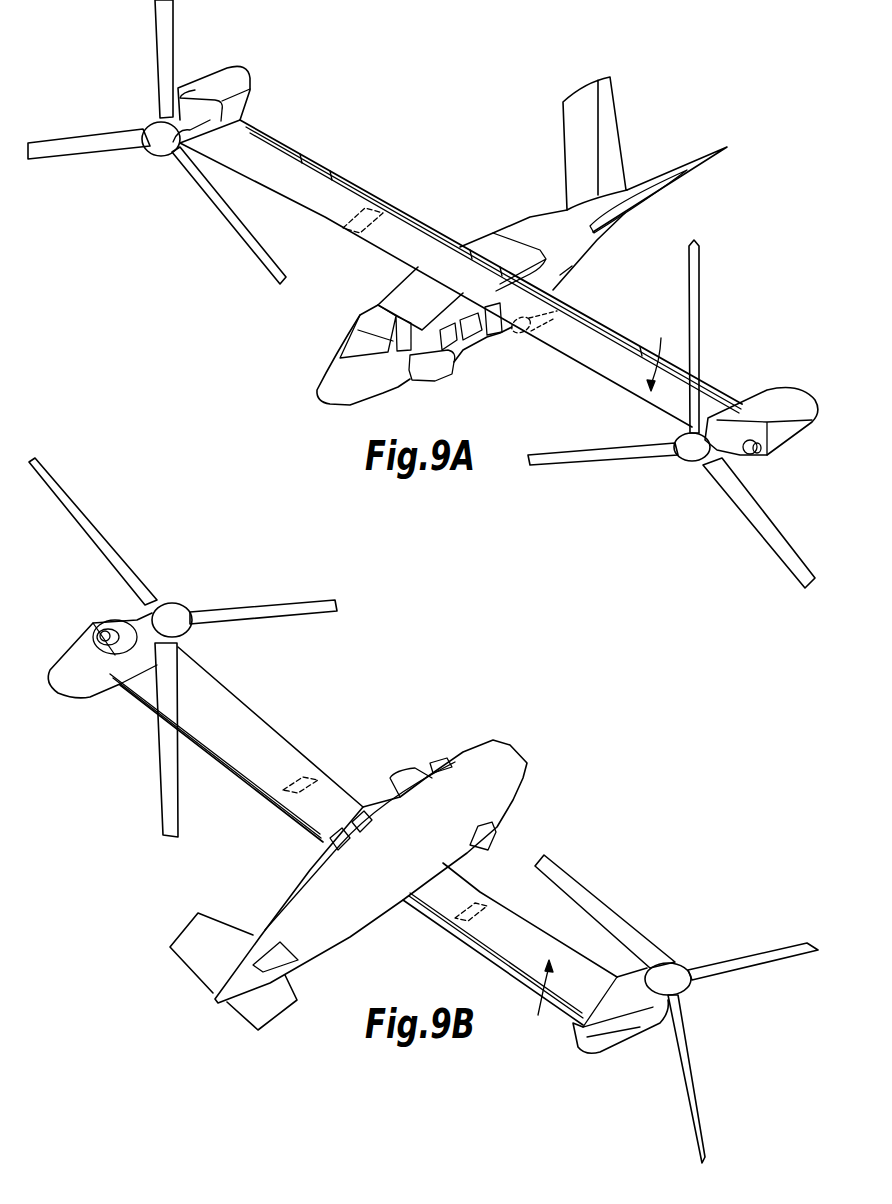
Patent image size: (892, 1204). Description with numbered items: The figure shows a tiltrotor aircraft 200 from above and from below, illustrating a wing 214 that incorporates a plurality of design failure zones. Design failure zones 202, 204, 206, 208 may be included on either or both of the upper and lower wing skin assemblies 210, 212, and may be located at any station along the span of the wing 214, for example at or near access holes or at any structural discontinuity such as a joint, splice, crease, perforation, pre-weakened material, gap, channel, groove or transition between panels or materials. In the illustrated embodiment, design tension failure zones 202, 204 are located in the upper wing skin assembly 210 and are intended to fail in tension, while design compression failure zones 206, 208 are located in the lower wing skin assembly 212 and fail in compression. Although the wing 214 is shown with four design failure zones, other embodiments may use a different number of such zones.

In FIG. 9A, the tiltrotor aircraft 200 is at (448, 112).
In FIG. 9B, the tiltrotor aircraft 200 is at (404, 727).
In FIG. 9A, the design tension failure zone 202 is at (518, 333).
In FIG. 9A, the design tension failure zone 204 is at (350, 203).
In FIG. 9B, the design compression failure zone 206 is at (477, 927).
In FIG. 9B, the design compression failure zone 208 is at (325, 780).
In FIG. 9A, the upper wing skin assembly 210 is at (277, 160).
In FIG. 9B, the lower wing skin assembly 212 is at (232, 743).
In FIG. 9A, the wing 214 is at (662, 353).
In FIG. 9B, the wing 214 is at (540, 1001).